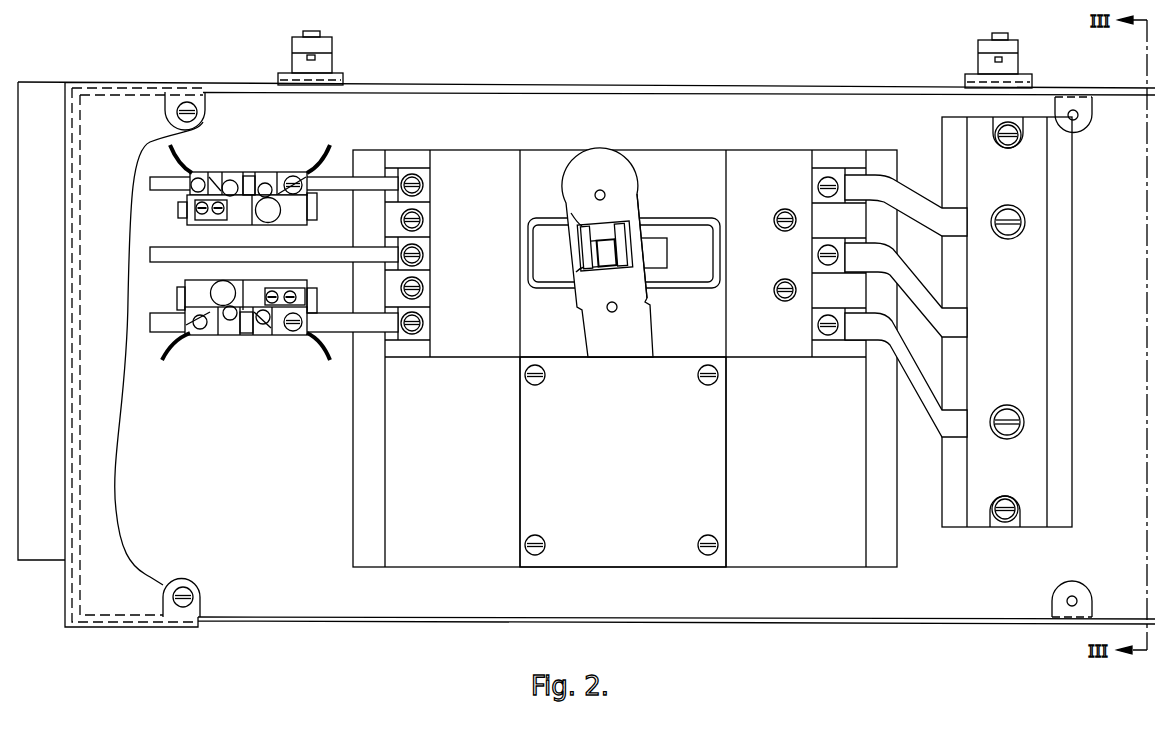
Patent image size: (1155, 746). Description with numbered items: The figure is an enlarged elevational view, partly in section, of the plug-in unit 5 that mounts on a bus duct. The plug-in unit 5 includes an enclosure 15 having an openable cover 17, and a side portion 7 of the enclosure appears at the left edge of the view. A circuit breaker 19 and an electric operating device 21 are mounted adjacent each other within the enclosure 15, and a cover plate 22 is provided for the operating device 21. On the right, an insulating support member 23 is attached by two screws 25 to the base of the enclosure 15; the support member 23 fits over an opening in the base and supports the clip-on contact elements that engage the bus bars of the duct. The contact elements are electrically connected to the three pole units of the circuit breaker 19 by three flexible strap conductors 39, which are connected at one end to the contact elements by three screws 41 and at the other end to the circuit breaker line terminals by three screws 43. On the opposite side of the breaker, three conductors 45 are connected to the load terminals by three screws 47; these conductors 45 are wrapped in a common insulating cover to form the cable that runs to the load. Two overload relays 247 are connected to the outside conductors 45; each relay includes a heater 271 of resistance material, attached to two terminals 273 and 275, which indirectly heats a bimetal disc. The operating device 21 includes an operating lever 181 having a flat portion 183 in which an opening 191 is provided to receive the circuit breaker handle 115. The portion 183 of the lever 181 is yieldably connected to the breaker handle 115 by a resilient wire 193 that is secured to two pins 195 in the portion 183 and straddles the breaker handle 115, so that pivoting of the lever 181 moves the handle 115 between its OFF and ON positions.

The plug-in unit 5 is at (233, 449).
The side wall 7 is at (42, 92).
The enclosure 15 is at (769, 89).
The openable cover 17 is at (124, 100).
The circuit breaker 19 is at (682, 181).
The electric operating device 21 is at (613, 456).
The cover plate 22 is at (798, 555).
The insulating support member 23 is at (996, 282).
The screws 25 is at (1010, 124).
The flexible strap conductors 39 is at (928, 217).
The screws 41 is at (1006, 208).
The screws 43 is at (817, 186).
The conductors 45 is at (332, 188).
The screws 47 is at (423, 188).
The circuit breaker handle 115 is at (610, 252).
The operating lever 181 is at (600, 349).
The flat portion 183 is at (646, 329).
The opening 191 is at (571, 213).
The resilient wire 193 is at (576, 272).
The pins 195 is at (600, 190).
The overload relays 247 is at (136, 216).
The heater 271 is at (258, 180).
The terminal 273 is at (281, 182).
The terminal 275 is at (214, 183).